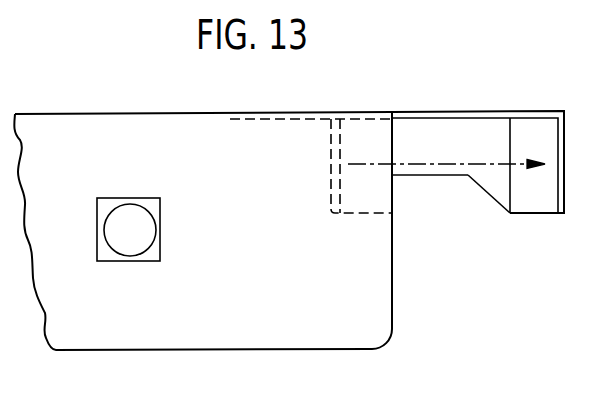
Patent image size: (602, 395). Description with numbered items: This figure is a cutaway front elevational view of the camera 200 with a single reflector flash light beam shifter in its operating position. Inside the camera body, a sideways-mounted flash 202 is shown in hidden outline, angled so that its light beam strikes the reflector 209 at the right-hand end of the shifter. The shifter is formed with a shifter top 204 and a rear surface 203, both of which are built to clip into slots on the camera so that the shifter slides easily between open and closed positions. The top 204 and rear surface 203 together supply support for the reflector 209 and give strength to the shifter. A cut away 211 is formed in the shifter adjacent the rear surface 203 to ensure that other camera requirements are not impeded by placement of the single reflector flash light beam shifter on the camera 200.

The camera 200 is at (72, 113).
The sideways-mounted flash 202 is at (330, 143).
The rear surface 203 is at (493, 193).
The shifter top 204 is at (460, 111).
The reflector 209 is at (543, 205).
The cut away 211 is at (445, 176).